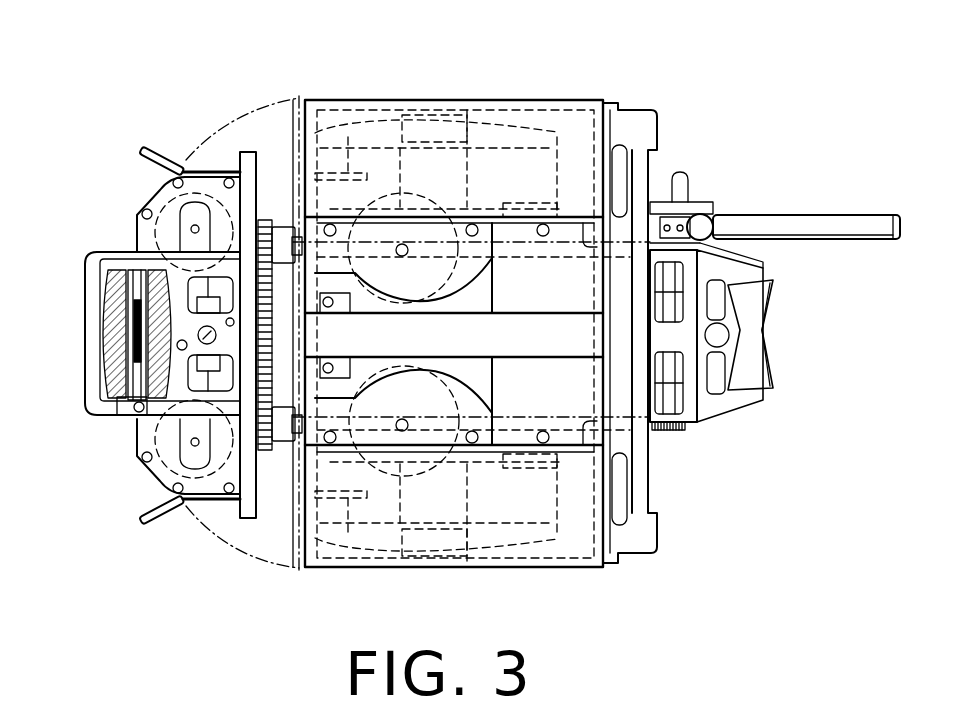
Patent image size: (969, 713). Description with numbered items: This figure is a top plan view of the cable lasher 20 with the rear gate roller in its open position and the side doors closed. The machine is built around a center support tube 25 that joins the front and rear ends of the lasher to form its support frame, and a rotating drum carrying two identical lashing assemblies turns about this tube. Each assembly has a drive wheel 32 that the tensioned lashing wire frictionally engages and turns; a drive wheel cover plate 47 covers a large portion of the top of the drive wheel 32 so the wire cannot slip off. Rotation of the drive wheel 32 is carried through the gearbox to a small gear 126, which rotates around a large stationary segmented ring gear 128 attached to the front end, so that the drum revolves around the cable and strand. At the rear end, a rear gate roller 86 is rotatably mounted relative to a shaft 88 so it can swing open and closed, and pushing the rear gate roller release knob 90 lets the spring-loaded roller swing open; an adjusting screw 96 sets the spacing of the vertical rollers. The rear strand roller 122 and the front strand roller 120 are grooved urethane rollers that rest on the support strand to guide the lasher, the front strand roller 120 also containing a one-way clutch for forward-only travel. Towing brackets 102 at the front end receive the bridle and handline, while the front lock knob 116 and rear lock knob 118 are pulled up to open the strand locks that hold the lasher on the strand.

The cable lasher 20 is at (421, 333).
The center support tube 25 is at (557, 252).
The drive wheel 32 is at (415, 205).
The drive wheel cover plate 47 is at (330, 252).
The rear gate roller 86 is at (803, 224).
The shaft 88 is at (707, 217).
The rear gate roller release knob 90 is at (684, 187).
The adjusting screw 96 is at (688, 427).
The towing brackets 102 is at (141, 149).
The front lock knob 116 is at (133, 432).
The rear lock knob 118 is at (739, 408).
The front strand roller 120 is at (93, 412).
The rear strand roller 122 is at (748, 358).
The small gear 126 is at (263, 213).
The large stationary segmented ring gear 128 is at (265, 440).